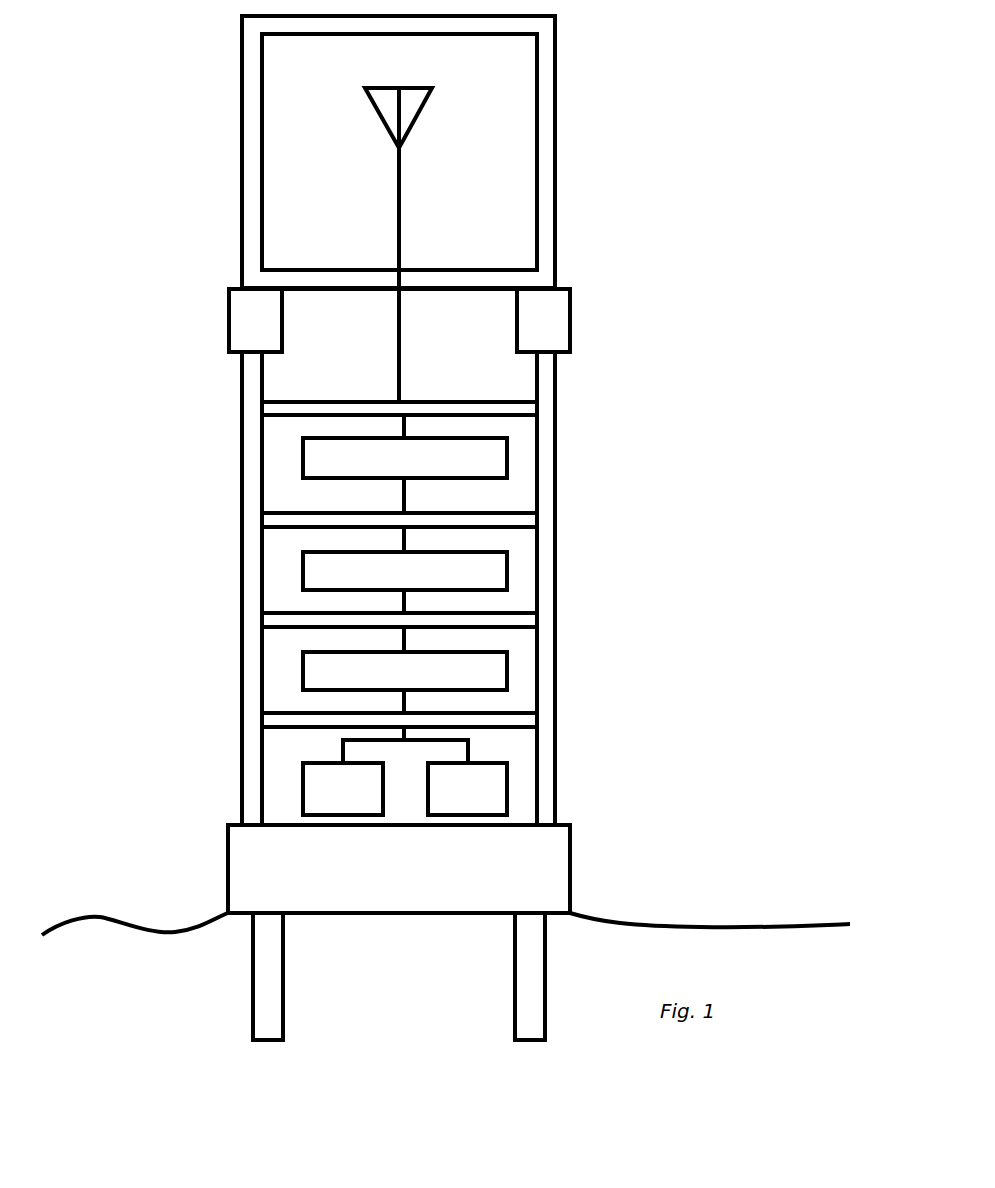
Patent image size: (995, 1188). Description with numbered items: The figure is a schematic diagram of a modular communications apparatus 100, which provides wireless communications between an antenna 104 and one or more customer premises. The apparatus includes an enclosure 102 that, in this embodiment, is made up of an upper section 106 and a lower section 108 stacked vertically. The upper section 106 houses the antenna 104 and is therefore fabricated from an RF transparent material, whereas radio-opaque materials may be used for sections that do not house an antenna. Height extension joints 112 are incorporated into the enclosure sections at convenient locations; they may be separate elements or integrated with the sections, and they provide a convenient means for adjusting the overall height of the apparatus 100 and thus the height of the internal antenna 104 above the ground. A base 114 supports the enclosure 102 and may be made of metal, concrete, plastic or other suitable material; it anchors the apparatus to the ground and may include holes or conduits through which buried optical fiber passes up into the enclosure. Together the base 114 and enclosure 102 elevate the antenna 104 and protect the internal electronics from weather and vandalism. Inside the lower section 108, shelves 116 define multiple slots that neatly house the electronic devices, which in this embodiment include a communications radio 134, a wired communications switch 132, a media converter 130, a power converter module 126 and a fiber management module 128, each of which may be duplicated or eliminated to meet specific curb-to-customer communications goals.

The modular communications apparatus 100 is at (733, 200).
The enclosure 102 is at (213, 377).
The antenna 104 is at (380, 100).
The upper section 106 is at (552, 110).
The lower section 108 is at (549, 515).
The height extension joint 112 is at (555, 316).
The base 114 is at (558, 874).
The shelf 116 is at (497, 405).
The power converter module 126 is at (335, 793).
The fiber management module 128 is at (487, 784).
The media converter 130 is at (487, 670).
The wired communications switch 132 is at (497, 575).
The communications radio 134 is at (493, 458).